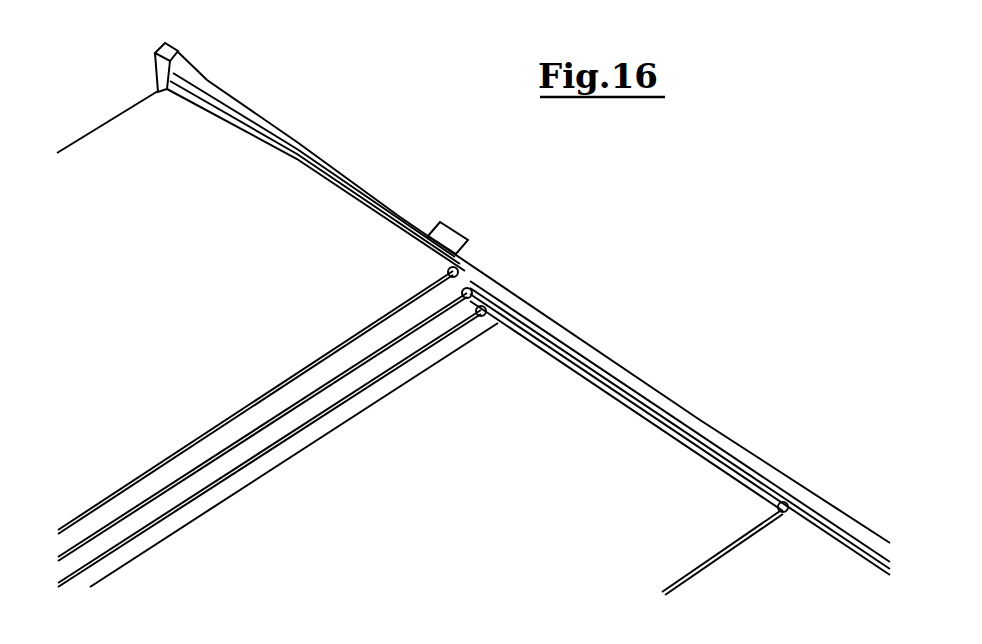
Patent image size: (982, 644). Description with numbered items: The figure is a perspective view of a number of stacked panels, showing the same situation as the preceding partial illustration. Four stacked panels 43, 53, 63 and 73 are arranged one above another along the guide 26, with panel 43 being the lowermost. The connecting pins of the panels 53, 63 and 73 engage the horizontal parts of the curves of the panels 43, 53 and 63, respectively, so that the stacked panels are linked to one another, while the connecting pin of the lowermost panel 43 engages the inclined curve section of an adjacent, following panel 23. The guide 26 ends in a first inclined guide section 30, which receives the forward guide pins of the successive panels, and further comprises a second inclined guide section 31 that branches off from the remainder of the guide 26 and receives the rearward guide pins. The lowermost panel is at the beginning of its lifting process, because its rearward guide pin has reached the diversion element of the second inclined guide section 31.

The panel 23 is at (593, 413).
The guide 26 is at (732, 452).
The first inclined guide section 30 is at (183, 74).
The second inclined guide section 31 is at (450, 237).
The panel 43 is at (485, 309).
The panel 53 is at (471, 290).
The panel 63 is at (457, 268).
The panel 73 is at (270, 180).